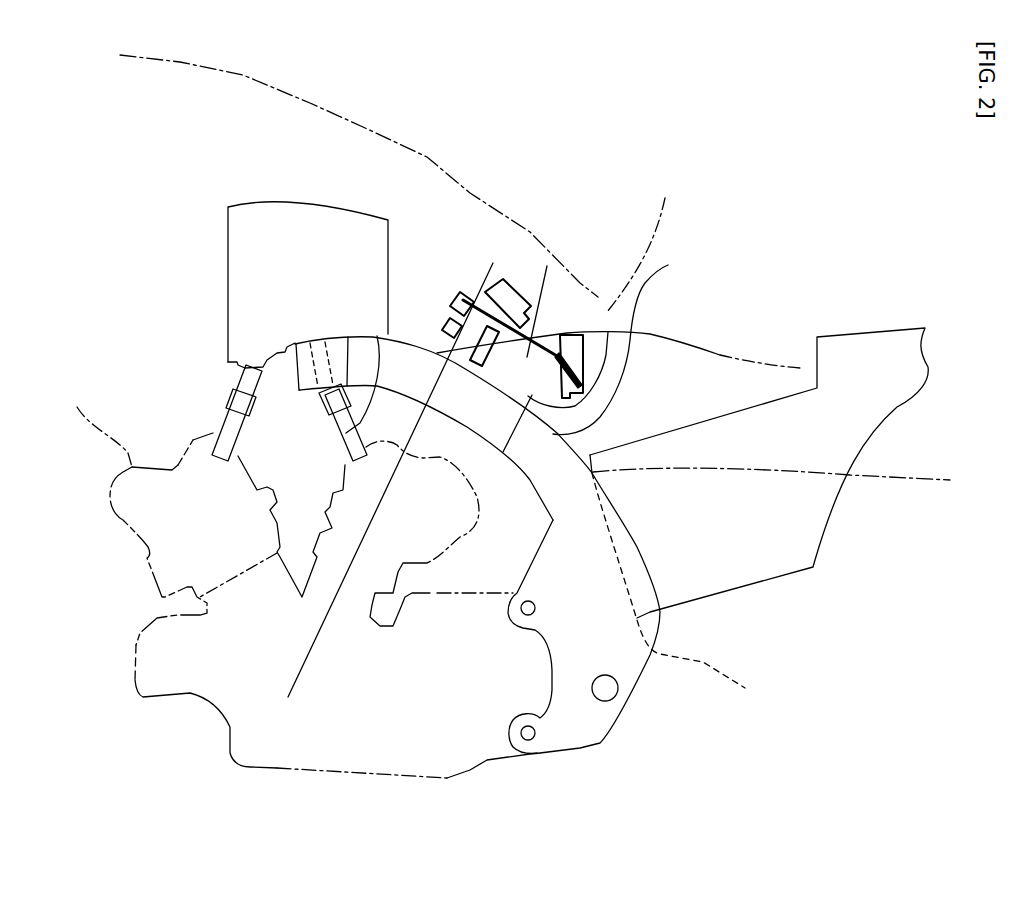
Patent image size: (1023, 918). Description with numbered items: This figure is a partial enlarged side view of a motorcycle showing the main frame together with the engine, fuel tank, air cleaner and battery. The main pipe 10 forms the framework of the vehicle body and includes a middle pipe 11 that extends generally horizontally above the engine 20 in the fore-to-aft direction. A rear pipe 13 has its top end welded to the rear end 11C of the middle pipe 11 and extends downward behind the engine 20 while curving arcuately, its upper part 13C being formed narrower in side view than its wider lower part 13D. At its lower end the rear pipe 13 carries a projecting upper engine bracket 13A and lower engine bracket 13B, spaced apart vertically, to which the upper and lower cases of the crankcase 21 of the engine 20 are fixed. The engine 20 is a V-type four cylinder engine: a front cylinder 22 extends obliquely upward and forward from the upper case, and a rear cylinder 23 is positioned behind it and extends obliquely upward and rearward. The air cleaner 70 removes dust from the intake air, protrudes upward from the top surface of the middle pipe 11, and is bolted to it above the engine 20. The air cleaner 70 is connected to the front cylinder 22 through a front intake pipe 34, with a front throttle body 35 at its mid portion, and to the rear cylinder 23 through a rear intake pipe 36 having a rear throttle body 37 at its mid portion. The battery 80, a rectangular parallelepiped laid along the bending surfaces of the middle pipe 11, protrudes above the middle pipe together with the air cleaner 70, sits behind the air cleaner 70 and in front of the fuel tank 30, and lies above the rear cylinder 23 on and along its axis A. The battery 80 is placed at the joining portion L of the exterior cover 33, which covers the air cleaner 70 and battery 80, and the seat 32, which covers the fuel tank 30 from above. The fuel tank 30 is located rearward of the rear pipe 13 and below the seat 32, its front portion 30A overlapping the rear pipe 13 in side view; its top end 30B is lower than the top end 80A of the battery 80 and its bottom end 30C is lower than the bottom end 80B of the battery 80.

The main pipe 10 is at (405, 326).
The middle pipe 11 is at (422, 368).
The rear end of middle pipe 11C is at (665, 330).
The rear pipe 13 is at (593, 535).
The upper engine bracket 13A is at (553, 573).
The lower engine bracket 13B is at (540, 718).
The upper part of rear pipe 13C is at (565, 495).
The lower part of rear pipe 13D is at (598, 647).
The engine 20 is at (367, 778).
The crankcase 21 is at (432, 703).
The front cylinder 22 is at (163, 573).
The rear cylinder 23 is at (343, 473).
The fuel tank 30 is at (787, 493).
The front portion of fuel tank 30A is at (638, 573).
The top end of fuel tank 30B is at (890, 343).
The bottom end of fuel tank 30C is at (686, 590).
The seat 32 is at (742, 360).
The exterior cover 33 is at (343, 112).
The front intake pipe 34 is at (222, 432).
The front throttle body 35 is at (235, 410).
The rear intake pipe 36 is at (406, 370).
The rear throttle body 37 is at (350, 333).
The air cleaner 70 is at (282, 233).
The battery 80 is at (609, 330).
The top end of battery 80A is at (500, 256).
The bottom end of battery 80B is at (624, 340).
The axis of rear cylinder A is at (538, 286).
The joining portion L is at (640, 242).